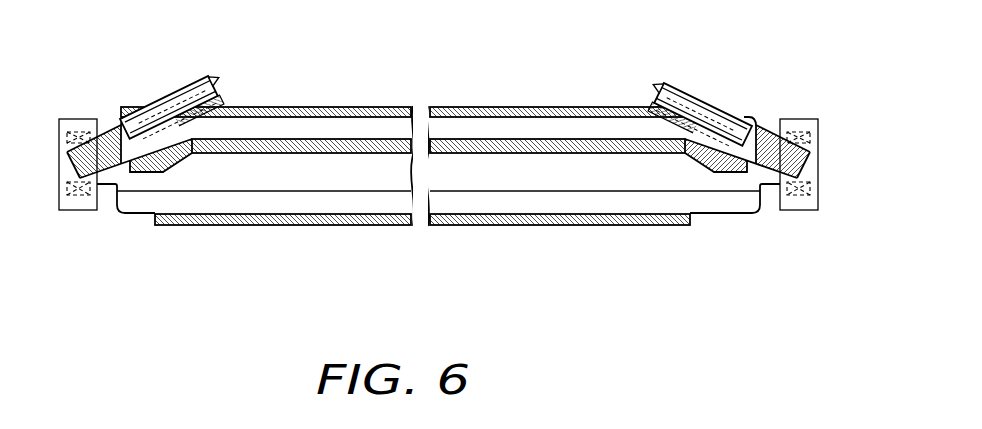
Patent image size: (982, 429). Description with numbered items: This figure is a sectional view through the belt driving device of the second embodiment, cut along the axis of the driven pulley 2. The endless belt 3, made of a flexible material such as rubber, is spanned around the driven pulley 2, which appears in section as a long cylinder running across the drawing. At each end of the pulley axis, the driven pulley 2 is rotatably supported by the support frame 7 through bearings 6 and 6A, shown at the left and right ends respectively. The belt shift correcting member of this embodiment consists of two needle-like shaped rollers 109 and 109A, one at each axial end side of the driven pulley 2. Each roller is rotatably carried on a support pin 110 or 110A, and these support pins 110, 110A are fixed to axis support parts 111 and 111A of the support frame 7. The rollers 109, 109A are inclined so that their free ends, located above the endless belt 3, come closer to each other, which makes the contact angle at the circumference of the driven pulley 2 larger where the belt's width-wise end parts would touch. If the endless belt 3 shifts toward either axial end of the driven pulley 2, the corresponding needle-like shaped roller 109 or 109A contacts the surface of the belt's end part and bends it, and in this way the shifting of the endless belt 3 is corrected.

The driven pulley 2 is at (728, 218).
The endless belt 3 is at (497, 224).
The bearing 6 is at (77, 211).
The bearing 6A is at (812, 142).
The support frame 7 is at (492, 142).
The needle-like shaped roller 109 is at (175, 78).
The needle-like shaped roller 109A is at (705, 81).
The support pin 110 is at (192, 100).
The support pin 110A is at (692, 108).
The axis support part 111 is at (114, 126).
The axis support part 111A is at (768, 130).